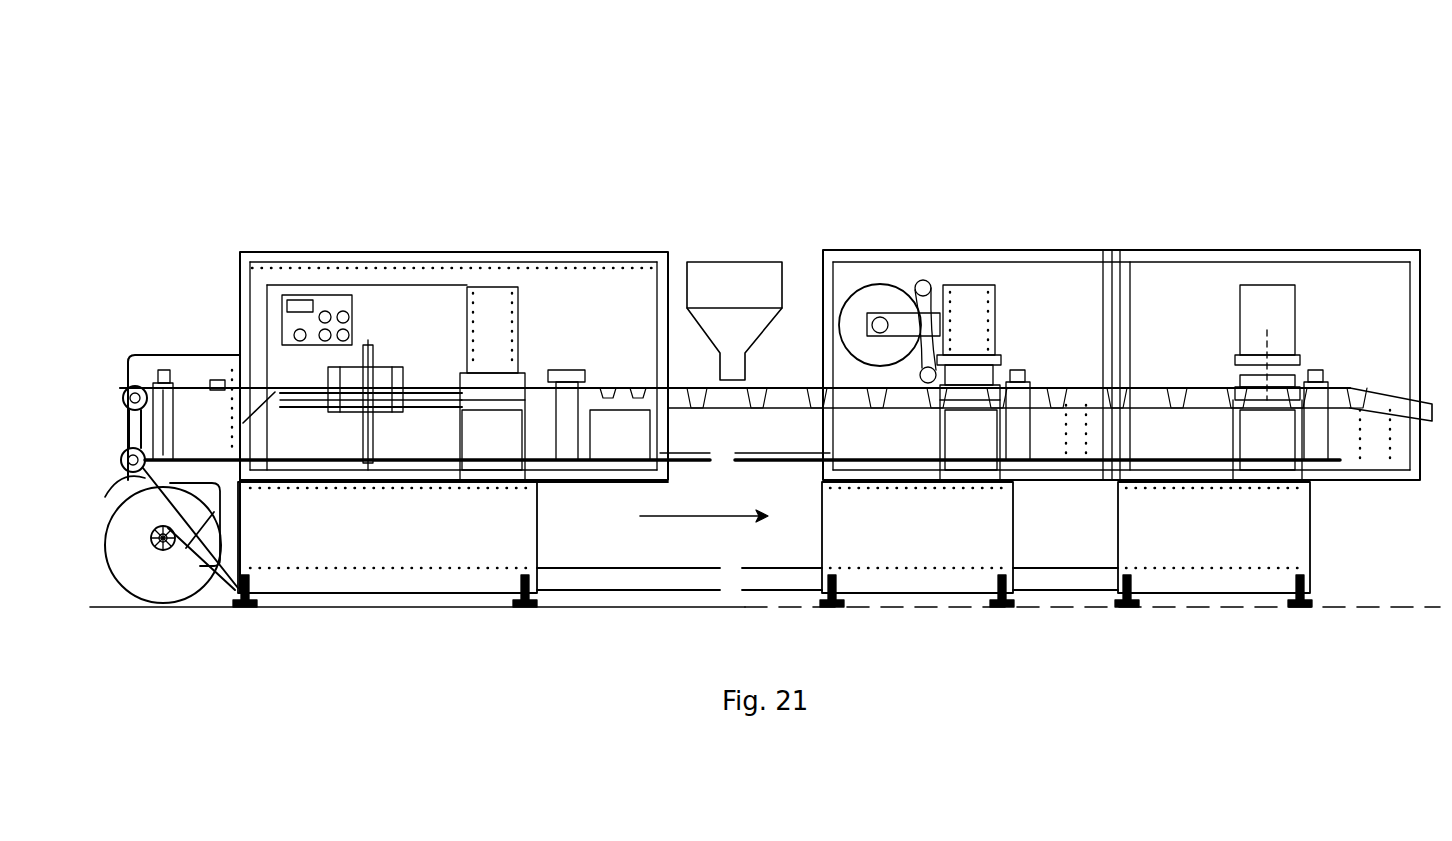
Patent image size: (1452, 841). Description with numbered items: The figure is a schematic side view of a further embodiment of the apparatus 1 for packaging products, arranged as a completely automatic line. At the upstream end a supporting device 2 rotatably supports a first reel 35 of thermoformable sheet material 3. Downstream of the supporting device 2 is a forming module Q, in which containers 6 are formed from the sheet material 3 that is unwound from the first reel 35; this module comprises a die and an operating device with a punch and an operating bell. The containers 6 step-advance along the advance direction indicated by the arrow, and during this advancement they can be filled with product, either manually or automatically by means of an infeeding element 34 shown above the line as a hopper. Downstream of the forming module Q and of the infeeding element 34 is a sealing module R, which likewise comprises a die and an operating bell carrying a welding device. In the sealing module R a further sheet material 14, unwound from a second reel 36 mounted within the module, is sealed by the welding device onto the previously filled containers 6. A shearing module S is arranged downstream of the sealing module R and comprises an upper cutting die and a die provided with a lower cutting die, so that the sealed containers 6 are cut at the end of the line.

The apparatus for packaging products 1 is at (282, 126).
The supporting device 2 is at (170, 624).
The thermoformable sheet material 3 is at (160, 485).
The containers 6 is at (620, 390).
The further sheet material 14 is at (905, 283).
The infeeding element 34 is at (732, 272).
The first reel 35 is at (147, 582).
The second reel 36 is at (867, 302).
The forming module Q is at (538, 298).
The sealing module R is at (972, 273).
The shearing module S is at (1225, 254).